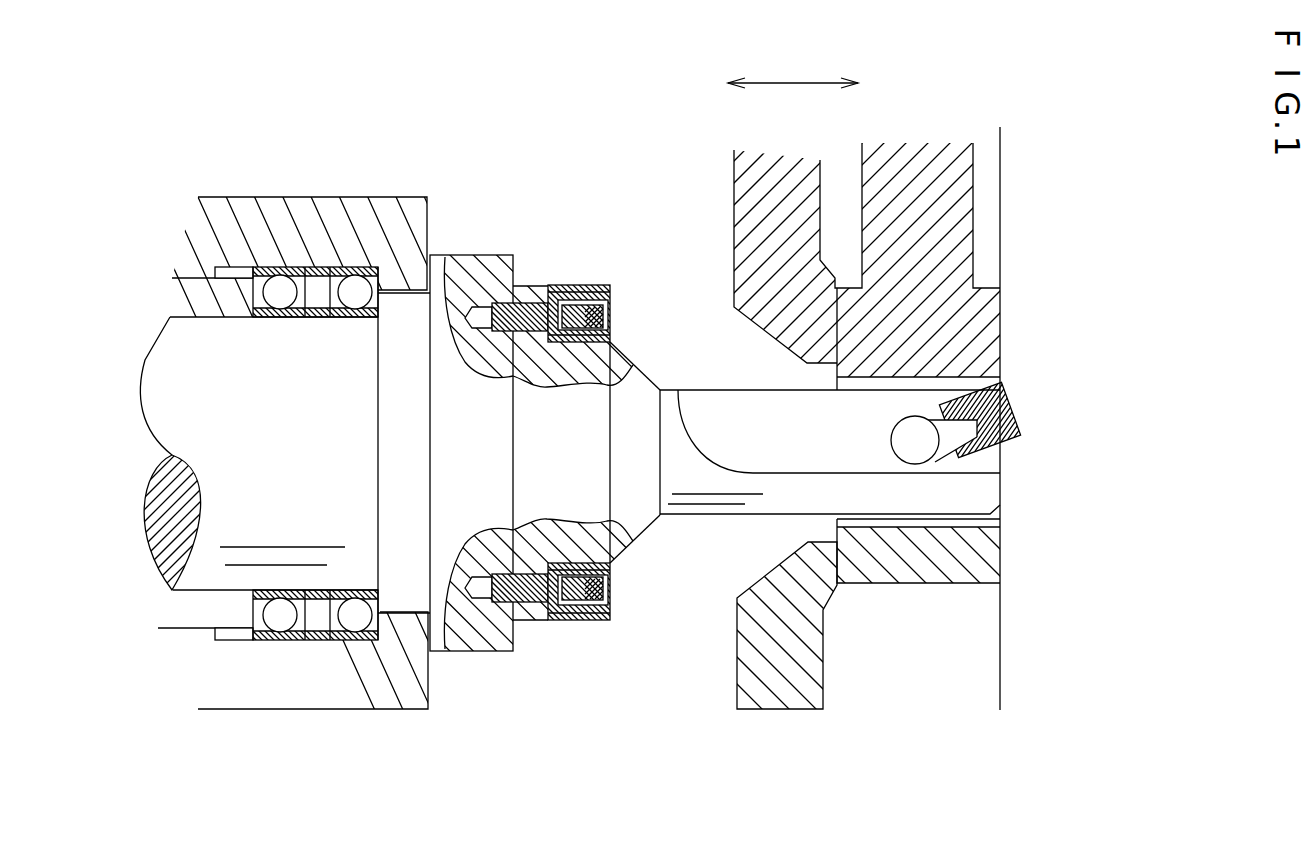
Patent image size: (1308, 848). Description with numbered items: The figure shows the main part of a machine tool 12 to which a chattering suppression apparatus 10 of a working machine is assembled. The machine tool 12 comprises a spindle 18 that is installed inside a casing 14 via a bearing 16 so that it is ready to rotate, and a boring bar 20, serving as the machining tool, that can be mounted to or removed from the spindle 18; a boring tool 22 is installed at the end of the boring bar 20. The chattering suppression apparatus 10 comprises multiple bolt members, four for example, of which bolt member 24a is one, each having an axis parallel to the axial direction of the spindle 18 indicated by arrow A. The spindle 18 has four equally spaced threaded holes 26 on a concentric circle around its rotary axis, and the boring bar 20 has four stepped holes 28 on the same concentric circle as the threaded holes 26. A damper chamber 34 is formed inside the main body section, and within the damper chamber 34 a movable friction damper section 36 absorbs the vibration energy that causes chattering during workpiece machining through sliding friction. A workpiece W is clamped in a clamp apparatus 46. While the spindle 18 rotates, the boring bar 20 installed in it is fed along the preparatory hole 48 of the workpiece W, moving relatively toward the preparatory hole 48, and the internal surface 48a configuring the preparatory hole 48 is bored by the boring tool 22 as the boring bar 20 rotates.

The machine tool 12 is at (450, 69).
The casing 14 is at (310, 212).
The bearing 16 is at (352, 618).
The spindle 18 is at (172, 365).
The damper chamber 34 is at (513, 272).
The chattering suppression apparatus 10 is at (553, 285).
The threaded holes 26 is at (493, 587).
The movable friction damper section 36 is at (597, 285).
The stepped holes 28 is at (613, 590).
The bolt member 24a is at (553, 600).
The boring bar 20 is at (717, 374).
The clamp apparatus 46 is at (734, 198).
The preparatory hole 48 is at (1003, 537).
The internal surface 48a is at (933, 522).
The workpiece W is at (1003, 292).
The boring tool 22 is at (1013, 403).
The axial direction arrow A is at (793, 63).